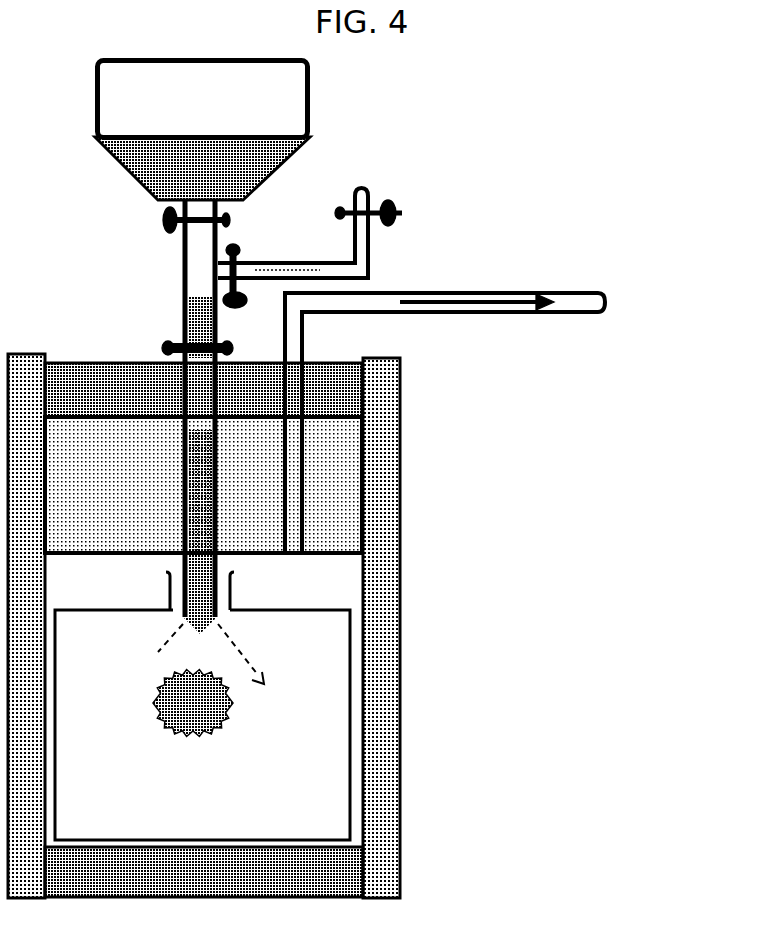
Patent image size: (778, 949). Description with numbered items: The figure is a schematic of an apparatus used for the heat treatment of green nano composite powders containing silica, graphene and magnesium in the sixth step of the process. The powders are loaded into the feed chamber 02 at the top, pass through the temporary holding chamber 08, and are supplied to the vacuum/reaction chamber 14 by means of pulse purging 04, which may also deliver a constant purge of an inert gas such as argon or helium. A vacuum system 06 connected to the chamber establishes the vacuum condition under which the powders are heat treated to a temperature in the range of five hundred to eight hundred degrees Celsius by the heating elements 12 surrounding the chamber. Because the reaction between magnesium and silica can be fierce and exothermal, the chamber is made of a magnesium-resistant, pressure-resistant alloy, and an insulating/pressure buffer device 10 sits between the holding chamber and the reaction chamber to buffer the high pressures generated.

The feed chamber 02 is at (235, 85).
The pulse purging 04 is at (402, 213).
The vacuum system 06 is at (605, 300).
The temporary holding chamber 08 is at (218, 333).
The insulating/pressure buffer device 10 is at (342, 502).
The heating elements 12 is at (400, 640).
The vacuum/reaction chamber 14 is at (265, 748).